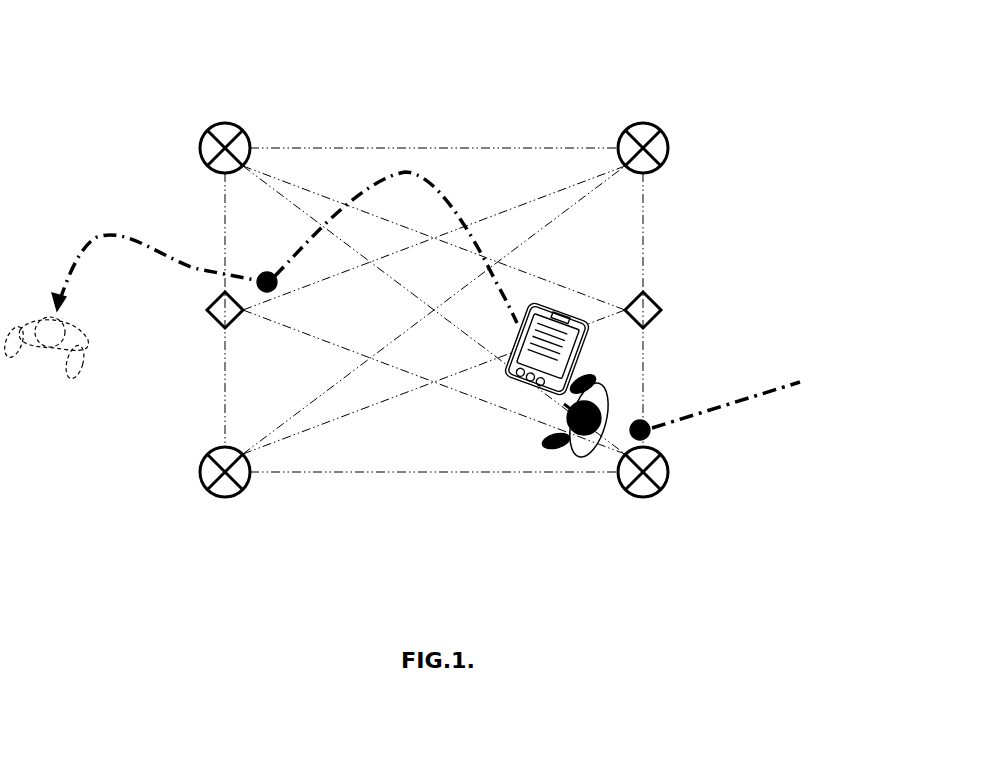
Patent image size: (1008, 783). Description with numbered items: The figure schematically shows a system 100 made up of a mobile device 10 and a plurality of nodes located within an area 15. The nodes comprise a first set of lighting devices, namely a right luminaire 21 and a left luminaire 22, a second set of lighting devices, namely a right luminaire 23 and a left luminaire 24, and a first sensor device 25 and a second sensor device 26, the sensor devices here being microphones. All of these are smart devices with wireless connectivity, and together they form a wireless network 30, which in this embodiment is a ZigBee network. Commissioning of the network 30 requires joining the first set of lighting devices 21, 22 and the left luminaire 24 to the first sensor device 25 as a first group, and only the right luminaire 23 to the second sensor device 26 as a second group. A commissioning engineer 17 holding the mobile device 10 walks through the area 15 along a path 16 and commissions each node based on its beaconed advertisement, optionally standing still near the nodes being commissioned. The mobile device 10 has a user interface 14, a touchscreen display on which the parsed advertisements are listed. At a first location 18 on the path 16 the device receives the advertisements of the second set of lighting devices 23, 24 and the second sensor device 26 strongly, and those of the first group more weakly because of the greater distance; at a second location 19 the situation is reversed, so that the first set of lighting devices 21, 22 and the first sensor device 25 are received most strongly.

The system 100 is at (214, 77).
The mobile device 10 is at (611, 320).
The user interface 14 is at (545, 307).
The area 15 is at (806, 315).
The path 16 is at (97, 236).
The commissioning engineer 17 is at (585, 456).
The first location 18 is at (647, 422).
The second location 19 is at (262, 276).
The right luminaire 21 is at (247, 138).
The left luminaire 22 is at (226, 498).
The right luminaire 23 is at (667, 142).
The left luminaire 24 is at (664, 488).
The first sensor device 25 is at (207, 310).
The second sensor device 26 is at (661, 310).
The wireless network 30 is at (432, 392).